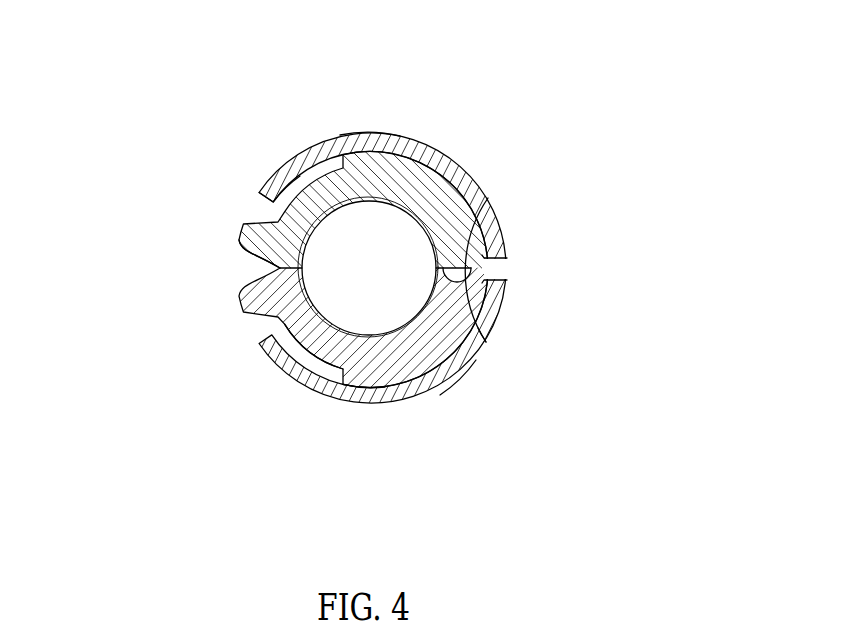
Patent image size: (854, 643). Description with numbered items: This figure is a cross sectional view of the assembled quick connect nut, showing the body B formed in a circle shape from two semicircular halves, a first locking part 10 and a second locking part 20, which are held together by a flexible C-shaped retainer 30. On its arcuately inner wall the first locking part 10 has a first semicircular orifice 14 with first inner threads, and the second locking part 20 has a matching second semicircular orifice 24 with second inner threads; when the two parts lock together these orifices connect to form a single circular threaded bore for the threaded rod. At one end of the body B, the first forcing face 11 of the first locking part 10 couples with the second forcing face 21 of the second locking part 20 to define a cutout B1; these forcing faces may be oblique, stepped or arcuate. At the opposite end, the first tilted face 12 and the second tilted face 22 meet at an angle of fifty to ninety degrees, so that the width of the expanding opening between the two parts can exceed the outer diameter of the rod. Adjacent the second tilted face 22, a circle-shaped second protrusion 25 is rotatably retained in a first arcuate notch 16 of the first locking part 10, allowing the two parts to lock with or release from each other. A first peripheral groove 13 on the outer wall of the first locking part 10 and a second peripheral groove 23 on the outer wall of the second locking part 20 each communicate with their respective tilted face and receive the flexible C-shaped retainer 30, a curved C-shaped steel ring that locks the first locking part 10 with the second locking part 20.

The first locking part 10 is at (412, 363).
The first forcing face 11 is at (245, 275).
The first tilted face 12 is at (510, 282).
The first peripheral groove 13 is at (368, 388).
The first semicircular orifice 14 is at (326, 326).
The first arcuate notch 16 is at (486, 342).
The second locking part 20 is at (413, 170).
The second forcing face 21 is at (245, 262).
The second tilted face 22 is at (510, 258).
The second peripheral groove 23 is at (368, 147).
The second semicircular orifice 24 is at (322, 211).
The second protrusion 25 is at (488, 198).
The flexible C-shaped retainer 30 is at (471, 360).
The body B is at (502, 110).
The cutout B1 is at (246, 267).